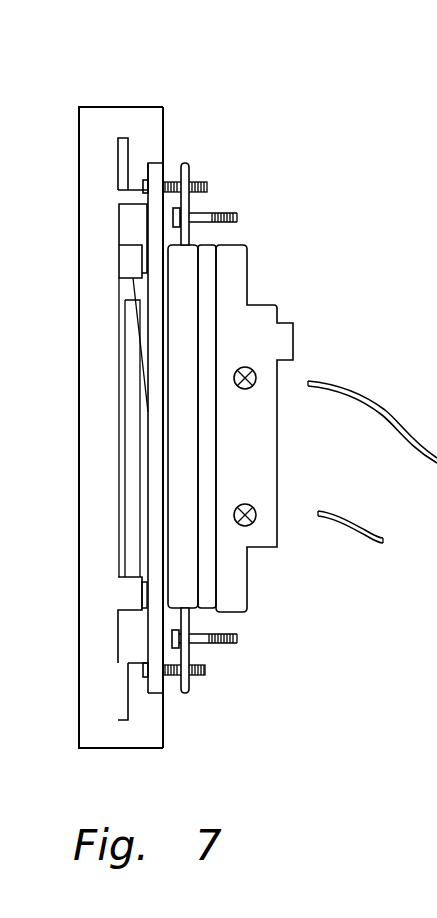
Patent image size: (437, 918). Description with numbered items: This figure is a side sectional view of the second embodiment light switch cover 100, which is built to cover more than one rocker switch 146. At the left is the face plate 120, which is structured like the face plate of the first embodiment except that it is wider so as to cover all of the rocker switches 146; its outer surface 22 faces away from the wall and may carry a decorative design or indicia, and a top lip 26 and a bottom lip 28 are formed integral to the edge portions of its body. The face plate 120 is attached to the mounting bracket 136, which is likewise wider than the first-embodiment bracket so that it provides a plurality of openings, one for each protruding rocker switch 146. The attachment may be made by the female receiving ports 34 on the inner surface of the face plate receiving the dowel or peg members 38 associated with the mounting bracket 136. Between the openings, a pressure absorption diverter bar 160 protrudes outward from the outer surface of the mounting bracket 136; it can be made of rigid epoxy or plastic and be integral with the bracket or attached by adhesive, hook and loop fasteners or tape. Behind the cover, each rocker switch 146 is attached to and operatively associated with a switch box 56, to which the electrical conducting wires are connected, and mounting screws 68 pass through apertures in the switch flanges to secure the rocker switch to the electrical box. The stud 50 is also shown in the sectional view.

The second embodiment light switch cover 100 is at (313, 113).
The top lip 26 is at (138, 165).
The stud / post 50 is at (217, 172).
The mounting screws 68 is at (240, 217).
The switch box 56 is at (283, 316).
The rocker switches 146 is at (140, 291).
The pressure absorption diverter bar 160 is at (125, 382).
The outer surface 22 is at (68, 470).
The dowel or peg members 38 is at (143, 582).
The female receiving ports 34 is at (128, 595).
The face plate 120 is at (95, 706).
The mounting bracket 136 is at (153, 694).
The bottom lip 28 is at (141, 708).